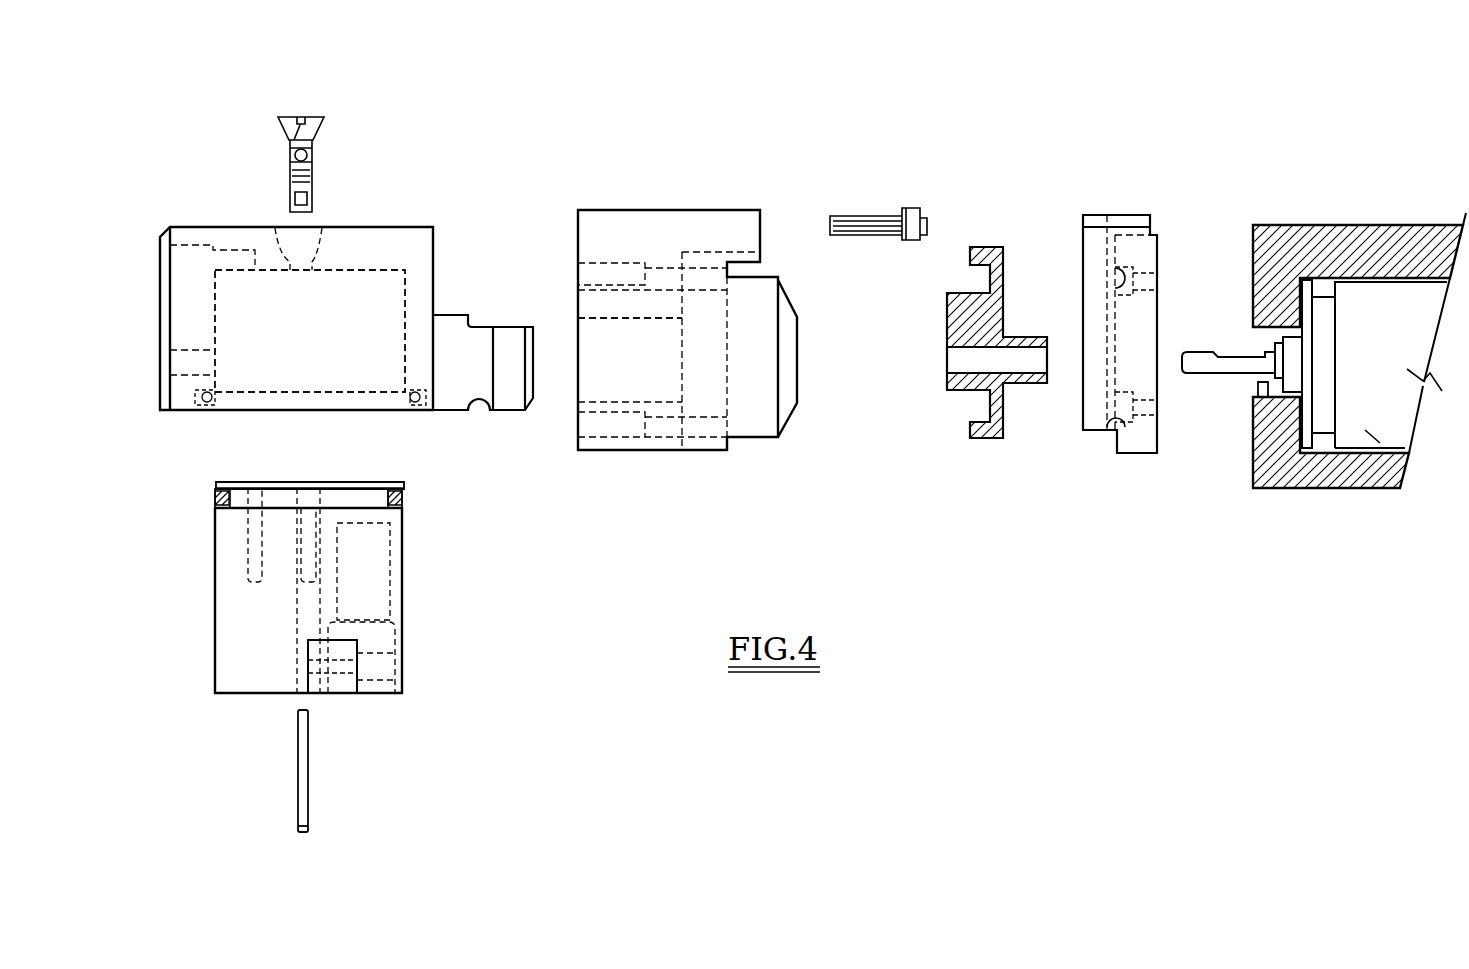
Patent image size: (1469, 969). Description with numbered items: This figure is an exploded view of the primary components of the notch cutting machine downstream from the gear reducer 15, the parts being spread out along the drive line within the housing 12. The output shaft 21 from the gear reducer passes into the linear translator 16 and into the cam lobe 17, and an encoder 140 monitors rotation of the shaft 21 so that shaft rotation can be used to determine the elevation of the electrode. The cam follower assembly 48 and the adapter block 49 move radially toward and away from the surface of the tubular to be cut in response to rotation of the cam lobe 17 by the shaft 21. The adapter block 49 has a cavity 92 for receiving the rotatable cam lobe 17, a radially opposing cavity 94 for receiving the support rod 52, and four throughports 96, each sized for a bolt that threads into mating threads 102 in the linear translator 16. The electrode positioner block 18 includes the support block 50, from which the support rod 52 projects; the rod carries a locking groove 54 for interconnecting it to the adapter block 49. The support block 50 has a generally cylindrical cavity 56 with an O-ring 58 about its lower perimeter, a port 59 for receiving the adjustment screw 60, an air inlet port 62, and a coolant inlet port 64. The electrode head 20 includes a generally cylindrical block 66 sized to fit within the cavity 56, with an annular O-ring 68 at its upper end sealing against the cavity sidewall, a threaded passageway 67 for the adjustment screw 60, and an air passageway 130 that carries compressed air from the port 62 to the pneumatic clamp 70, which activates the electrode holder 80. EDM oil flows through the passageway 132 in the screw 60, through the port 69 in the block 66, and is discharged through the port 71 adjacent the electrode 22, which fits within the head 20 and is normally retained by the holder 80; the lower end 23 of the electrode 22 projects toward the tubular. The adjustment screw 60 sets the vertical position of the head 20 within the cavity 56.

The housing 12 is at (1287, 478).
The gear reducer 15 is at (1397, 462).
The linear translator 16 is at (1145, 465).
The cam lobe 17 is at (1003, 447).
The electrode positioner block 18 is at (190, 418).
The electrode head 20 is at (412, 700).
The output shaft 21 is at (1237, 363).
The electrode 22 is at (300, 755).
The rod end 23 is at (300, 835).
The cam follower assembly 48 is at (855, 197).
The adapter block 49 is at (622, 205).
The support block 50 is at (207, 233).
The support rod 52 is at (517, 337).
The locking groove 54 is at (485, 410).
The cylindrical cavity 56 is at (257, 305).
The O-ring 58 is at (210, 402).
The port 59 is at (314, 225).
The adjustment screw 60 is at (337, 131).
The air inlet port 62 is at (186, 365).
The coolant inlet port 64 is at (178, 257).
The cylindrical block 66 is at (228, 545).
The threaded passageway 67 is at (313, 482).
The O-ring 68 is at (405, 498).
The port 69 is at (308, 600).
The pneumatic clamp 70 is at (368, 605).
The port 71 is at (297, 690).
The electrode holder 80 is at (340, 695).
The cavity 92 is at (710, 395).
The cavity 94 is at (605, 377).
The throughports 96 is at (665, 275).
The mating threads 102 is at (1110, 287).
The air passageway 130 is at (392, 555).
The passageway 132 is at (307, 155).
The encoder 140 is at (1252, 398).